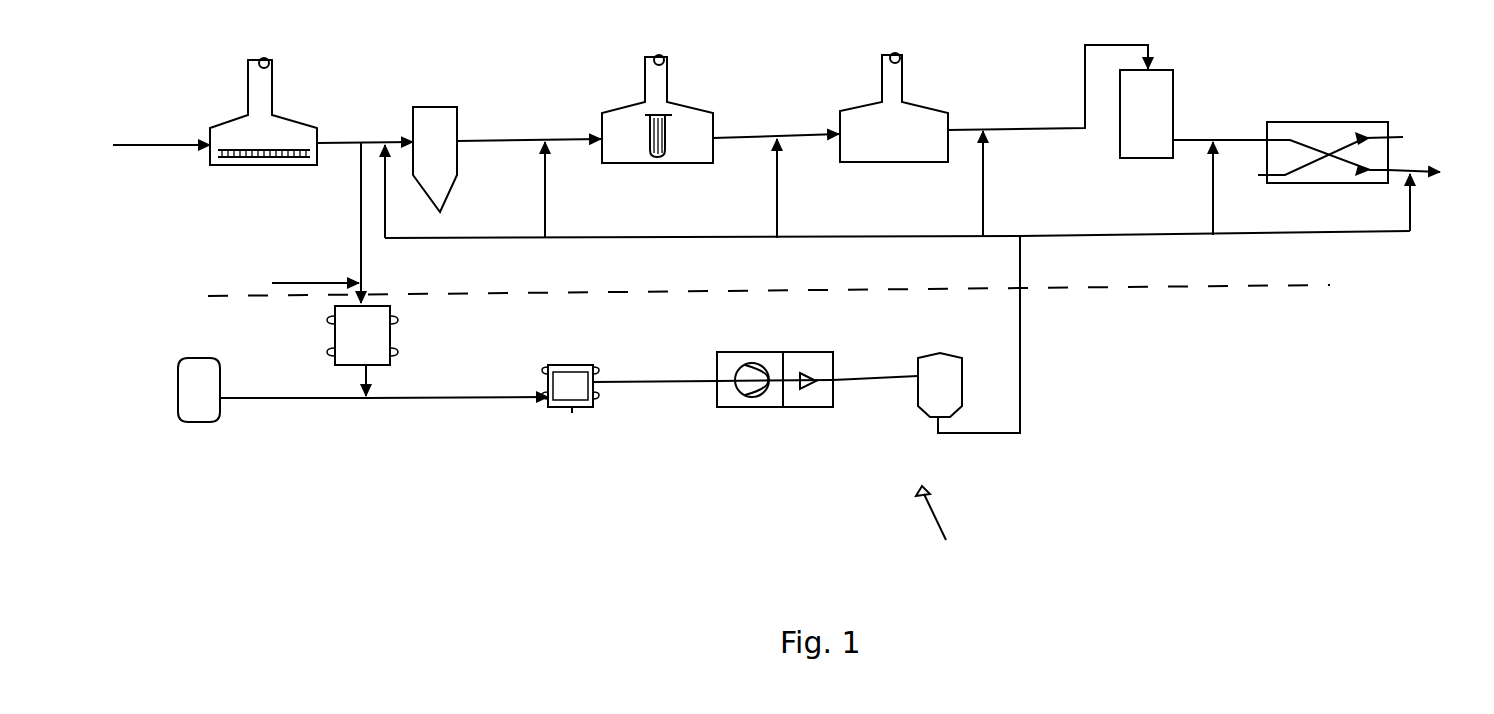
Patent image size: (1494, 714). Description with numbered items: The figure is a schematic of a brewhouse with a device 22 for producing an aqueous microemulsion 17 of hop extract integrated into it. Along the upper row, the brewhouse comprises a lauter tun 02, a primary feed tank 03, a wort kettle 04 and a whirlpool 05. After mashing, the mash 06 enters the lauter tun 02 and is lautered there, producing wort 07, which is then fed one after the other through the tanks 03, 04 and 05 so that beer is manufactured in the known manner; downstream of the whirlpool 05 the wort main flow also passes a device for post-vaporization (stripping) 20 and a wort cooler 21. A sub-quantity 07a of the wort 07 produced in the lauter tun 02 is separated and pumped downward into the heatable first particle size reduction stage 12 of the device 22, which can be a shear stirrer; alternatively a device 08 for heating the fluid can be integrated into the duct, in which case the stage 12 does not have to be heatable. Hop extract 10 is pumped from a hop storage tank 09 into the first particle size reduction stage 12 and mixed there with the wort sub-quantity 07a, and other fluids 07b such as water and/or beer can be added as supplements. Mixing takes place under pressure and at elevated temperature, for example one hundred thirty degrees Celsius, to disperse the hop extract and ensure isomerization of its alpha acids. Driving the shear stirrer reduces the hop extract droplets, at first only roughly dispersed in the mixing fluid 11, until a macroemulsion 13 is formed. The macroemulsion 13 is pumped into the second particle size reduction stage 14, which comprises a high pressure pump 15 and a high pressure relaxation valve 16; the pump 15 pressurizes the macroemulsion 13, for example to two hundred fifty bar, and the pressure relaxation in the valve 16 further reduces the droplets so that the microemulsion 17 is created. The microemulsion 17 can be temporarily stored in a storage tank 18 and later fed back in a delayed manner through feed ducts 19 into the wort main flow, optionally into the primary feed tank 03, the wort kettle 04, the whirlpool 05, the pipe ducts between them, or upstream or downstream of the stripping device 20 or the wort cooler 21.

The lauter tun 02 is at (282, 130).
The primary feed tank 03 is at (437, 112).
The wort kettle 04 is at (683, 115).
The whirlpool 05 is at (918, 116).
The mash 06 is at (145, 140).
The wort 07 is at (370, 140).
The wort sub-quantity 07a is at (361, 270).
The other fluids 07b is at (297, 281).
The device for heating the fluid 08 is at (398, 333).
The hop storage tank 09 is at (200, 365).
The hop extract 10 is at (270, 398).
The mixing fluid 11 is at (455, 398).
The first particle size reduction stage 12 is at (565, 370).
The macroemulsion 13 is at (660, 382).
The second particle size reduction stage 14 is at (783, 352).
The high pressure pump 15 is at (750, 392).
The high pressure relaxation valve 16 is at (808, 386).
The microemulsion 17 is at (870, 376).
The storage tank 18 is at (952, 383).
The feed ducts 19 is at (385, 203).
The device for post-vaporization (stripping) 20 is at (1175, 98).
The wort cooler 21 is at (1325, 120).
The device for producing an aqueous microemulsion 22 is at (769, 422).